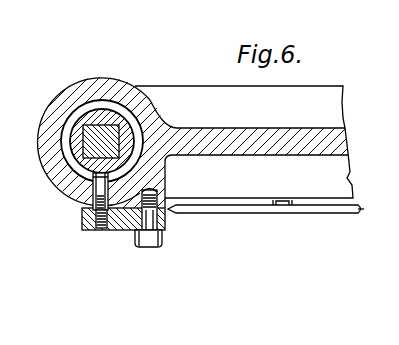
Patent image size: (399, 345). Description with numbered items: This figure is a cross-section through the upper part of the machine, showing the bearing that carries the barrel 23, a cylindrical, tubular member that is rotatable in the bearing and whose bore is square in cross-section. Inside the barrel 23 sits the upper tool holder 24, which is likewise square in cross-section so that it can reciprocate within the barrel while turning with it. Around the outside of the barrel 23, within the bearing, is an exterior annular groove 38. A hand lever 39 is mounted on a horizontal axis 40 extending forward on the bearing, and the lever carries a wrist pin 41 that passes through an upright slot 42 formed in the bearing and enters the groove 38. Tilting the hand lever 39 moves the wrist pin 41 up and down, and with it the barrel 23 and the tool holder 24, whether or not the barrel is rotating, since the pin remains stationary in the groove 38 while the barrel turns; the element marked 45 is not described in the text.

The barrel 23 is at (88, 121).
The upper tool holder 24 is at (111, 134).
The annular groove 38 is at (65, 128).
The hand lever 39 is at (258, 209).
The horizontal axis 40 is at (160, 236).
The wrist pin 41 is at (88, 205).
The upright slot 42 is at (90, 199).
The hub 45 is at (62, 148).